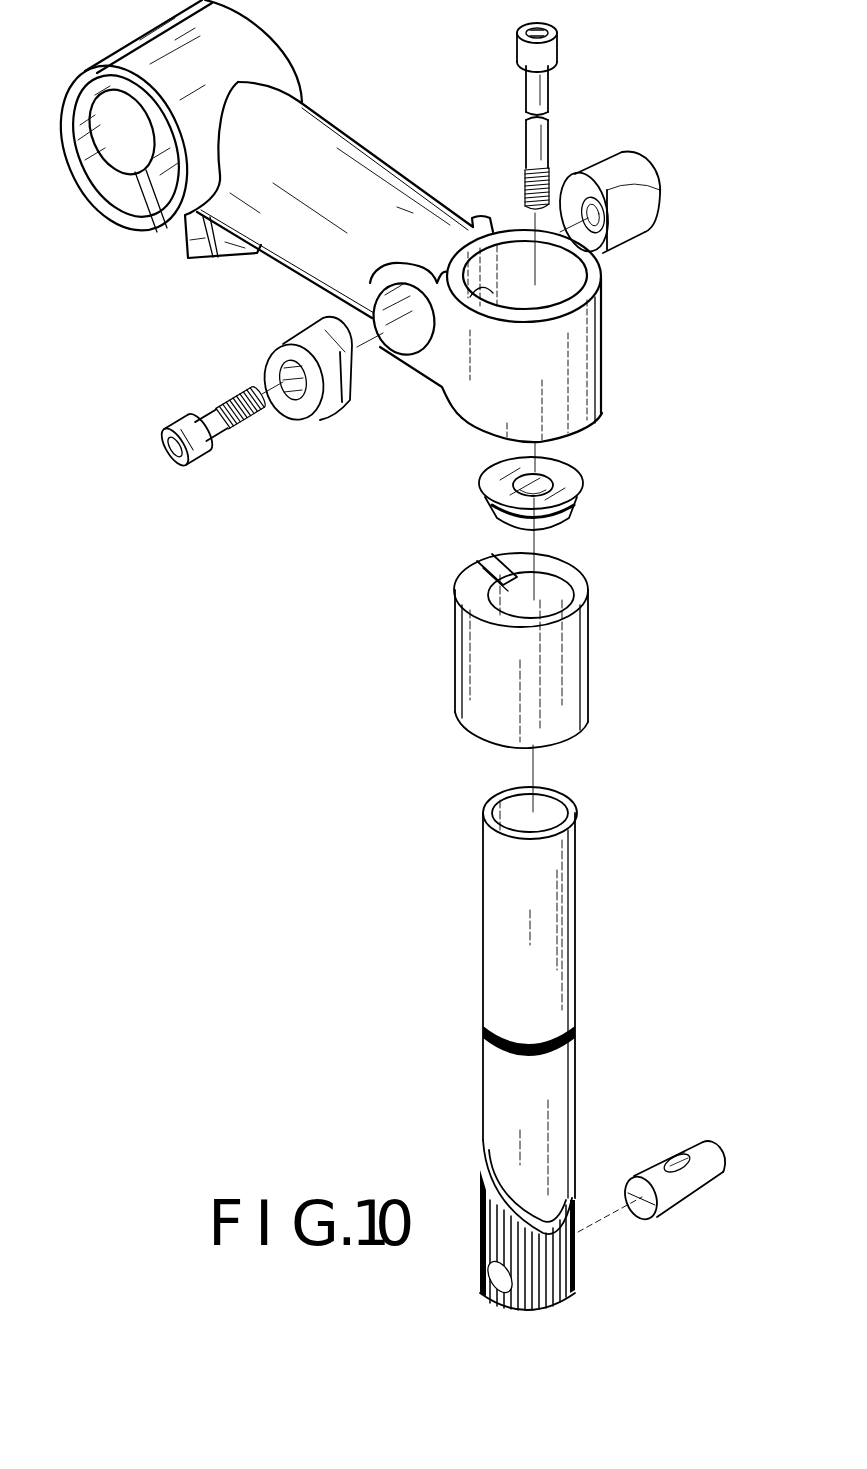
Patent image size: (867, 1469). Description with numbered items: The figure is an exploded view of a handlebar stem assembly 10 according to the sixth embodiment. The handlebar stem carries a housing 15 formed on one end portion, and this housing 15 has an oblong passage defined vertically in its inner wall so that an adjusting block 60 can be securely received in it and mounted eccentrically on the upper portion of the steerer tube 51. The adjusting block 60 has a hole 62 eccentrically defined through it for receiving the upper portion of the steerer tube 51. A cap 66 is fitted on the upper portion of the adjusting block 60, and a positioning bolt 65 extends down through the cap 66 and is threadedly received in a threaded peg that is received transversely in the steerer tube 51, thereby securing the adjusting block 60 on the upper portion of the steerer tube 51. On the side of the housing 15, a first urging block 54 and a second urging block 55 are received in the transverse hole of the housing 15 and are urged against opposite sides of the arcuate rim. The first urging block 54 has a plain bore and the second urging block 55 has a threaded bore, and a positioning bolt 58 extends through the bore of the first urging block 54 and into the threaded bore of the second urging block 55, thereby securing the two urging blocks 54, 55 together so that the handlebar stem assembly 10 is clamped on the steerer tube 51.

The handlebar stem assembly 10 is at (365, 221).
The housing 15 is at (595, 294).
The steerer tube 51 is at (483, 950).
The first urging block 54 is at (313, 408).
The second urging block 55 is at (637, 168).
The positioning bolt 58 is at (200, 452).
The adjusting block 60 is at (560, 649).
The hole 62 is at (570, 592).
The positioning bolt 65 is at (553, 92).
The cap 66 is at (585, 485).